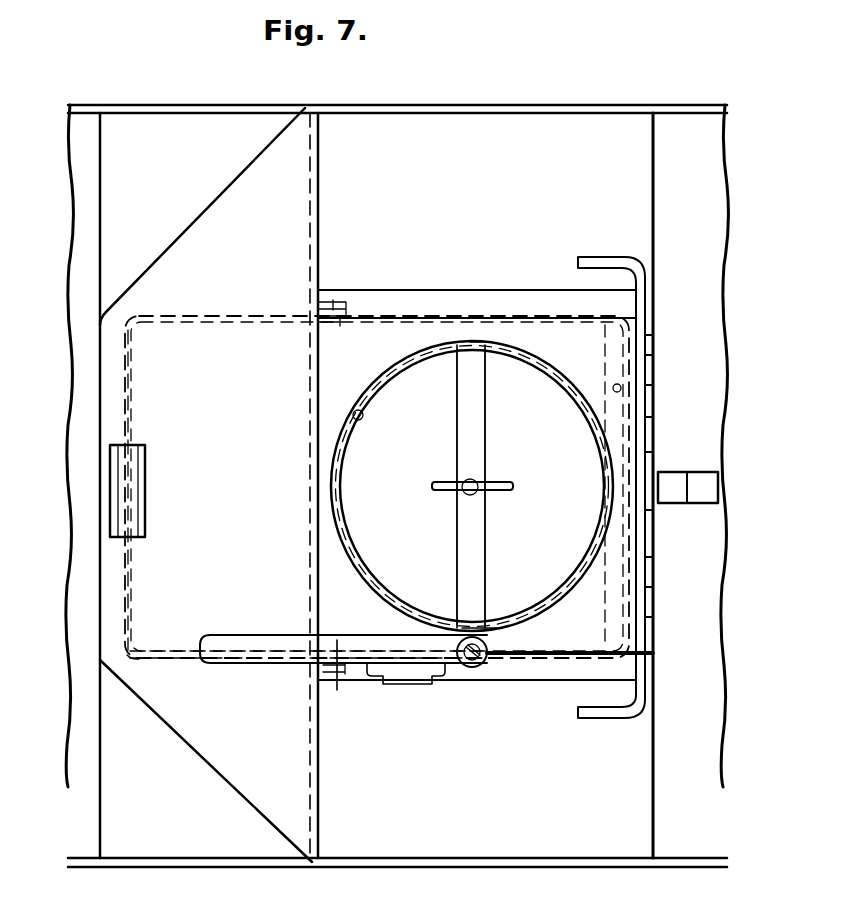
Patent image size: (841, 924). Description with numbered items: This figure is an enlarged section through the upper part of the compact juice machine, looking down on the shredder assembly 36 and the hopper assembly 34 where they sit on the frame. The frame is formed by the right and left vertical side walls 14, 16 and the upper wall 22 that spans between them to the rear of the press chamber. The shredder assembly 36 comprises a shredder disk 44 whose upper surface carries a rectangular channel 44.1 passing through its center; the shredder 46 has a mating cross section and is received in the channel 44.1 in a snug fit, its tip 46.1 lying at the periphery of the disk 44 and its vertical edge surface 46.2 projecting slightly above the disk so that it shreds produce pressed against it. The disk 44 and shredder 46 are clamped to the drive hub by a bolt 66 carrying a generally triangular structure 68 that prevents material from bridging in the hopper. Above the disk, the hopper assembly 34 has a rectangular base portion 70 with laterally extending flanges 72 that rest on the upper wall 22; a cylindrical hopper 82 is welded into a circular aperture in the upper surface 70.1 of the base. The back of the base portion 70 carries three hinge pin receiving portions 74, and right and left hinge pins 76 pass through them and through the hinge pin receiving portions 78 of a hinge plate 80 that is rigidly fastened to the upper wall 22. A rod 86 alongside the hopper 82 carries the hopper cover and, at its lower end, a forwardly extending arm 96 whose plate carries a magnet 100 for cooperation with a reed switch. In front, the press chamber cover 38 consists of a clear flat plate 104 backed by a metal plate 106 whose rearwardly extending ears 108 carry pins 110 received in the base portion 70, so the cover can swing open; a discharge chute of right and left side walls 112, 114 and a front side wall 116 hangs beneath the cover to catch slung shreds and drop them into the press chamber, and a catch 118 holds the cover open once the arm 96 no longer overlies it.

The right vertical side wall 14 is at (600, 868).
The left vertical side wall 16 is at (573, 105).
The upper wall 22 is at (680, 127).
The hopper assembly 34 is at (403, 305).
The shredder assembly 36 is at (508, 382).
The press chamber cover 38 is at (168, 100).
The shredder disk 44 is at (437, 431).
The channel 44.1 is at (486, 545).
The shredder 46 is at (462, 536).
The tip 46.1 is at (477, 341).
The vertical edge surface 46.2 is at (419, 576).
The bolt 66 is at (478, 473).
The triangular structure 68 is at (438, 482).
The rectangular base portion 70 is at (427, 321).
The upper surface 70.1 is at (348, 414).
The flanges 72 is at (550, 290).
The hinge pin receiving portions 74 is at (648, 356).
The hinge pins 76 is at (588, 258).
The hinge pin receiving portions 78 is at (648, 416).
The hinge plate 80 is at (614, 358).
The cylindrical hopper 82 is at (337, 540).
The rod 86 is at (458, 670).
The forwardly extending arm 96 is at (220, 665).
The magnet 100 is at (400, 690).
The clear flat rectangular plate 104 is at (191, 164).
The metal plate 106 is at (259, 254).
The ears 108 is at (383, 256).
The pins 110 is at (352, 302).
The right side wall 112 is at (140, 660).
The left side wall 114 is at (208, 318).
The front side wall 116 is at (130, 388).
The catch 118 is at (110, 486).